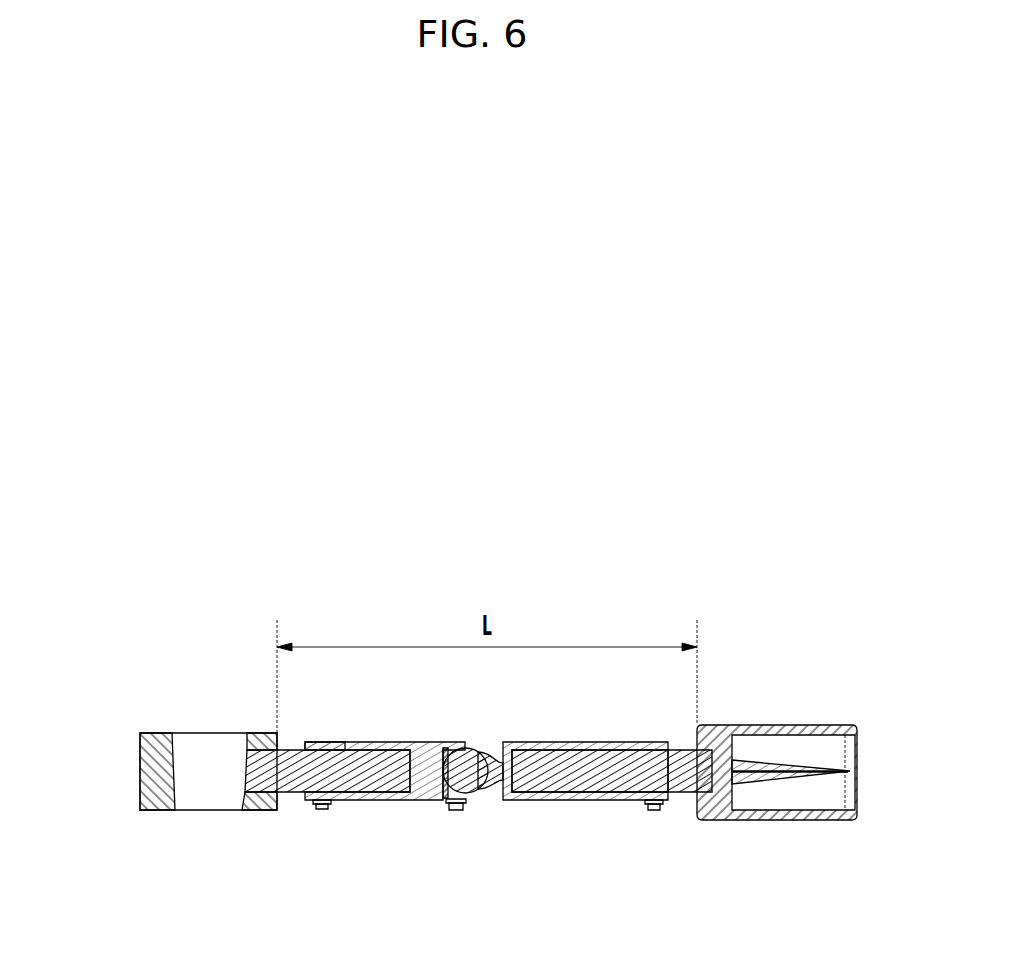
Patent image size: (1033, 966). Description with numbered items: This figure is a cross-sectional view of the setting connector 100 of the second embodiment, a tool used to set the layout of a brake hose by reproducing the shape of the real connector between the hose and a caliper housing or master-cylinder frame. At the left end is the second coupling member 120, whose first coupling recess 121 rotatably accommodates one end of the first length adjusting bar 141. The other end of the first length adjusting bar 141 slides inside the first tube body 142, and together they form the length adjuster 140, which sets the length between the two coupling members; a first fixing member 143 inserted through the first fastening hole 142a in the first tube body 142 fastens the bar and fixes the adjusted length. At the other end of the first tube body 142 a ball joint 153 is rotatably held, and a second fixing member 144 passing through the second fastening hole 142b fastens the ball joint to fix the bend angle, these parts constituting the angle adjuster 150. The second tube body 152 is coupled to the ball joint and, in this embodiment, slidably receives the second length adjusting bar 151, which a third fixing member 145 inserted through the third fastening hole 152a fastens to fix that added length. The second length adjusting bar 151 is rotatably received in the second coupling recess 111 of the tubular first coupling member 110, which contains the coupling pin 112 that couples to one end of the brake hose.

The setting connector 100 is at (779, 549).
The first coupling member 110 is at (780, 821).
The second coupling recess 111 is at (683, 800).
The coupling pin 112 is at (782, 762).
The second coupling member 120 is at (138, 772).
The first coupling recess 121 is at (258, 745).
The length adjuster 140 is at (432, 888).
The first length adjusting bar 141 is at (288, 797).
The first tube body 142 is at (350, 802).
The first fastening hole 142a is at (320, 742).
The second fastening hole 142b is at (450, 748).
The first fixing member 143 is at (320, 810).
The second length adjusting bar 144 is at (680, 800).
The third fixing member 145 is at (650, 813).
The angle adjuster 150 is at (568, 888).
The ball joint 151 is at (566, 794).
The second tube body 152 is at (576, 802).
The third fastening hole 152a is at (653, 802).
The second fixing member 153 is at (456, 811).